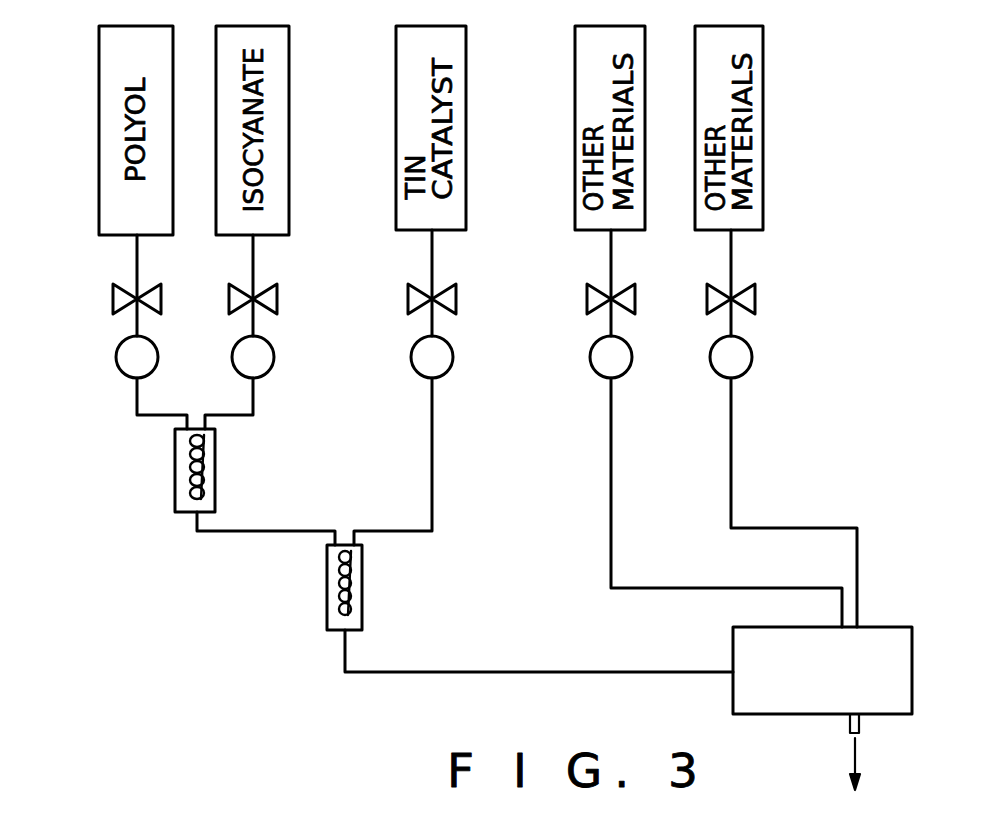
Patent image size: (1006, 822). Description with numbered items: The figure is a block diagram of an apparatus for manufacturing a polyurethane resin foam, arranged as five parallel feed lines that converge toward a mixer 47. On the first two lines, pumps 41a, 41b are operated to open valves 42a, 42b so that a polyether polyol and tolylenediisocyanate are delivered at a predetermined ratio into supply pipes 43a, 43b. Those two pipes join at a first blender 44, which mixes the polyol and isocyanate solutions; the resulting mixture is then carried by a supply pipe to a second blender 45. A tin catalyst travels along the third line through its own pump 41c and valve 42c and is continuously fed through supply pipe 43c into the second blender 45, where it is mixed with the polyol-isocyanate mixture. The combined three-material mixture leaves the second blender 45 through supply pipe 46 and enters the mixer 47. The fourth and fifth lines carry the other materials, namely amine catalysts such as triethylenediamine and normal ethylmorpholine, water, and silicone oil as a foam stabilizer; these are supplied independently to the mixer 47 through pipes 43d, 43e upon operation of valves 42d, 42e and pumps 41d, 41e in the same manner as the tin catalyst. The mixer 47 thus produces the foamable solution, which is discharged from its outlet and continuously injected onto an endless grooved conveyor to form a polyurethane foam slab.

The pump 41a is at (117, 362).
The pump 41b is at (277, 363).
The pump 41c is at (454, 362).
The pump 41d is at (633, 360).
The pump 41e is at (754, 362).
The valve 42a is at (113, 298).
The valve 42b is at (279, 300).
The valve 42c is at (457, 295).
The valve 42d is at (650, 289).
The valve 42e is at (756, 298).
The supply pipe 43a is at (134, 410).
The supply pipe 43b is at (256, 402).
The supply pipe 43c is at (434, 471).
The pipe 43d is at (613, 478).
The pipe 43e is at (733, 485).
The first blender 44 is at (216, 488).
The second blender 45 is at (363, 598).
The supply pipe 46 is at (383, 678).
The mixer 47 is at (913, 645).